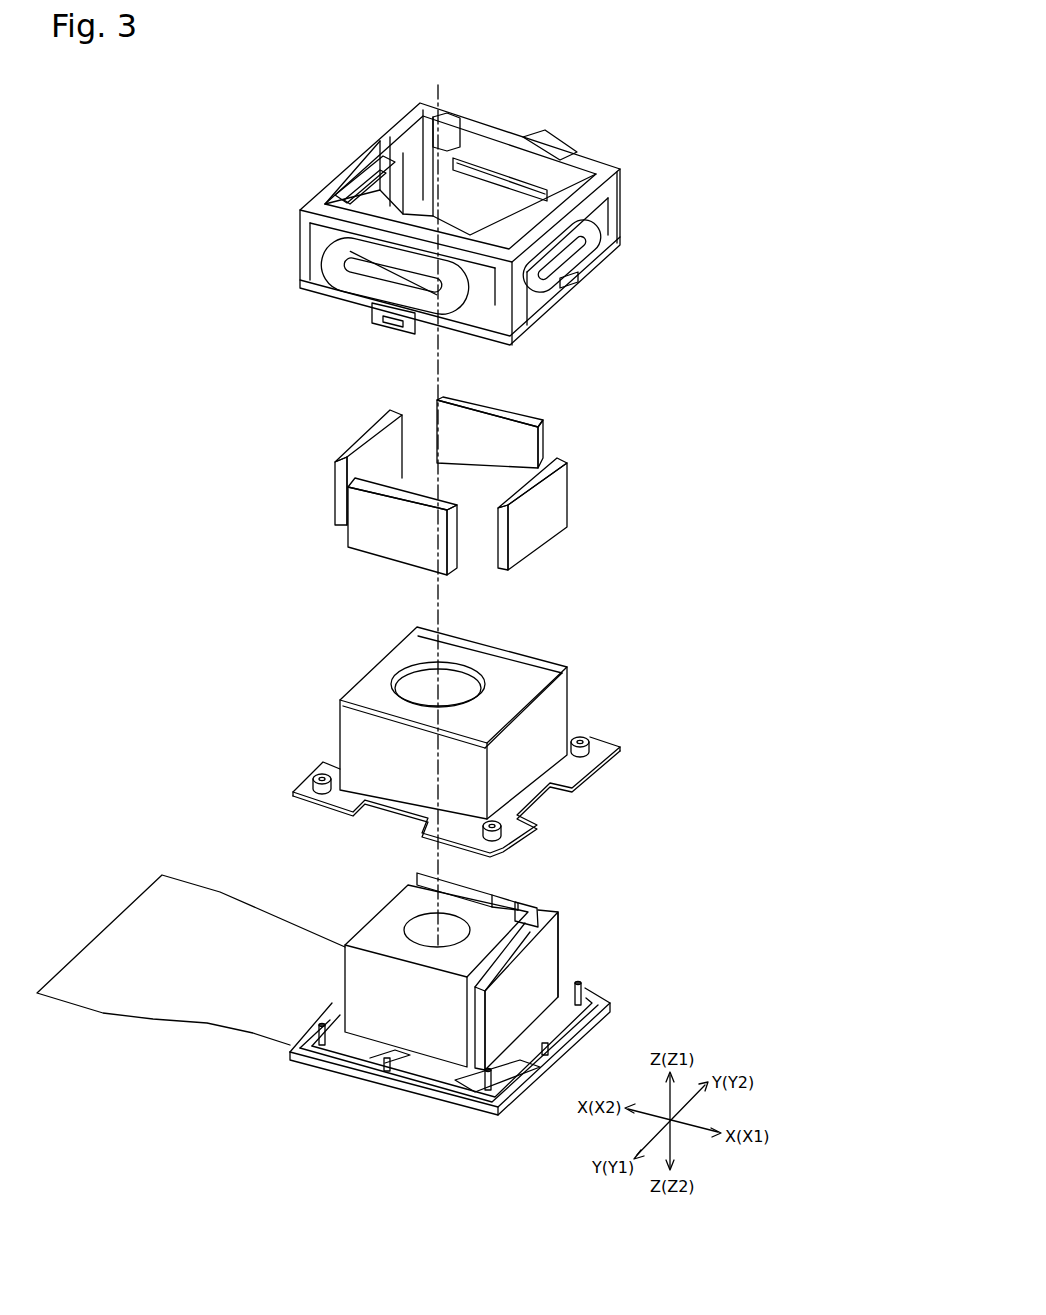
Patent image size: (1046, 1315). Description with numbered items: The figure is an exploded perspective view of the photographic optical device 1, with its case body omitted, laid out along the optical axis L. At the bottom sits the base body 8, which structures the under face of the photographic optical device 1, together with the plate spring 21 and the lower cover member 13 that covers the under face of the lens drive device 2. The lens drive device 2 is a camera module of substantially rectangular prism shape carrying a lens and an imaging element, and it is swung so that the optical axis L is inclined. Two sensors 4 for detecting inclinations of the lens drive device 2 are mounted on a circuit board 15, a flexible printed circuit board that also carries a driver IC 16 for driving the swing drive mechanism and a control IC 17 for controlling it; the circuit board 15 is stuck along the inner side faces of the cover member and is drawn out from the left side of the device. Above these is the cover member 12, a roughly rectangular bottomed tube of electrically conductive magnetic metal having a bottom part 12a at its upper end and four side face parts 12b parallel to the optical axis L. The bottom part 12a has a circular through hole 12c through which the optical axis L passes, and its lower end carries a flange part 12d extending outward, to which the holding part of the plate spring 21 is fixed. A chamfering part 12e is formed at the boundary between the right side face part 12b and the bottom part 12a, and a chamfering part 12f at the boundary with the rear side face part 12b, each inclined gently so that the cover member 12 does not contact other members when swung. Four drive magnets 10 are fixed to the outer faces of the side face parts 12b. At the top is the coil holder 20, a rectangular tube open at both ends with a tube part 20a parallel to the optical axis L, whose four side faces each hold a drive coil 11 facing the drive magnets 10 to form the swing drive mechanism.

The photographic optical device 1 is at (683, 135).
The lens drive device 2 is at (385, 917).
The sensor 4 is at (460, 885).
The base body 8 is at (460, 1103).
The drive magnet 10 is at (547, 433).
The drive coil 11 is at (370, 172).
The cover member 12 is at (485, 730).
The bottom part 12a is at (375, 680).
The side face part 12b is at (410, 767).
The through hole 12c is at (422, 660).
The flange part 12d is at (612, 748).
The chamfering part 12e is at (540, 678).
The chamfering part 12f is at (493, 647).
The lower cover member 13 is at (476, 1067).
The circuit board 15 is at (562, 950).
The driver IC 16 is at (522, 905).
The control IC 17 is at (558, 913).
The coil holder 20 is at (491, 224).
The tube part 20a is at (615, 198).
The plate spring 21 is at (515, 1083).
The optical axis L is at (443, 607).